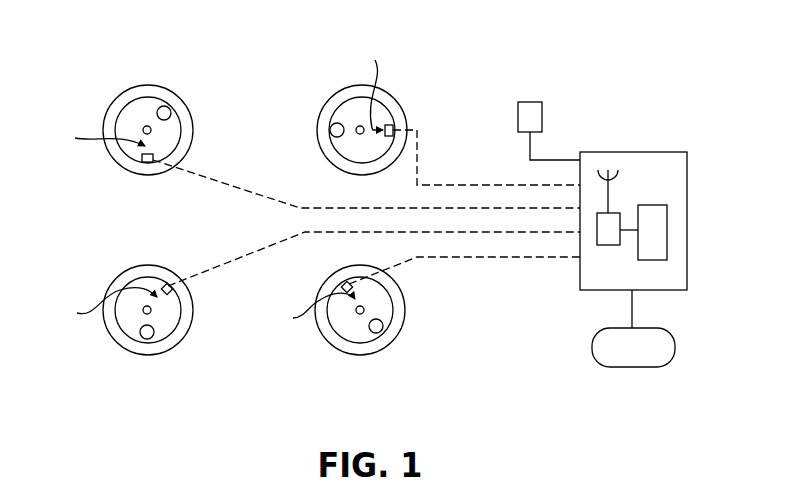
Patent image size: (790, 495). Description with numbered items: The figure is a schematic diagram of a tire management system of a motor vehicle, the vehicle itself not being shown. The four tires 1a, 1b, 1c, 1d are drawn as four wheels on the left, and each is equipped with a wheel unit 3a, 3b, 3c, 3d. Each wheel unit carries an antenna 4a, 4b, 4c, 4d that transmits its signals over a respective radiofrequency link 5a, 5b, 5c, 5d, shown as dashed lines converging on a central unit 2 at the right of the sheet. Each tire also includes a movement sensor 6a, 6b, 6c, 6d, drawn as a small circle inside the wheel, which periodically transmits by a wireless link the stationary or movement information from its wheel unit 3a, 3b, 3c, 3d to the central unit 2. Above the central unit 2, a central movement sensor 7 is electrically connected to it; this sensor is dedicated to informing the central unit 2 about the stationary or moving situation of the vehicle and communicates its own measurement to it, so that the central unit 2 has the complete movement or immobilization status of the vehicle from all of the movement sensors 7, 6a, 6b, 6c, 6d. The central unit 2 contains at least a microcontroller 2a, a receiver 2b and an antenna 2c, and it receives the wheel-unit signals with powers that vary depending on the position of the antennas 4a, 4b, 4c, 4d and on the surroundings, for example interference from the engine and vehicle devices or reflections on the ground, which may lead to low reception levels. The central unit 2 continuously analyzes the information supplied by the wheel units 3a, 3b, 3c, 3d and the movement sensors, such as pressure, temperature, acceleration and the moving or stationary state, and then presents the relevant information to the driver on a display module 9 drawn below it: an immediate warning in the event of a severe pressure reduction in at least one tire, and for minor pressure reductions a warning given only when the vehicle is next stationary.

The tire 1a is at (112, 100).
The tire 1b is at (326, 100).
The tire 1c is at (322, 340).
The tire 1d is at (112, 340).
The central unit 2 is at (666, 152).
The microcontroller 2a is at (667, 237).
The receiver 2b is at (607, 232).
The antenna 2c is at (613, 190).
The wheel unit 3a is at (141, 160).
The wheel unit 3b is at (393, 126).
The wheel unit 3c is at (342, 292).
The wheel unit 3d is at (161, 284).
The antenna 4a is at (95, 137).
The antenna 4b is at (370, 84).
The antenna 4c is at (310, 311).
The antenna 4d is at (102, 305).
The radiofrequency link 5a is at (192, 166).
The radiofrequency link 5b is at (420, 162).
The radiofrequency link 5c is at (450, 258).
The radiofrequency link 5d is at (203, 277).
The movement sensor 6a is at (164, 106).
The movement sensor 6b is at (330, 130).
The movement sensor 6c is at (378, 333).
The movement sensor 6d is at (147, 339).
The central movement sensor 7 is at (535, 100).
The display module 9 is at (612, 350).